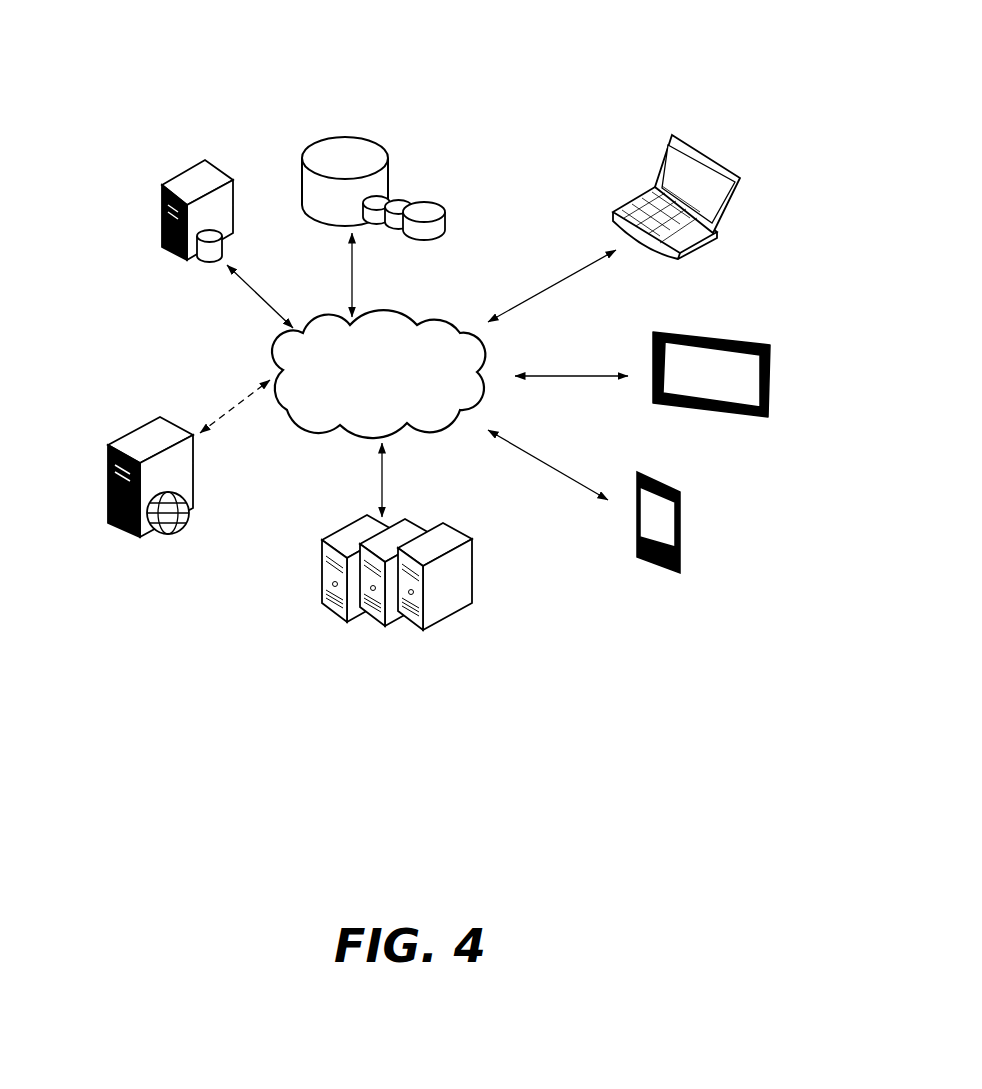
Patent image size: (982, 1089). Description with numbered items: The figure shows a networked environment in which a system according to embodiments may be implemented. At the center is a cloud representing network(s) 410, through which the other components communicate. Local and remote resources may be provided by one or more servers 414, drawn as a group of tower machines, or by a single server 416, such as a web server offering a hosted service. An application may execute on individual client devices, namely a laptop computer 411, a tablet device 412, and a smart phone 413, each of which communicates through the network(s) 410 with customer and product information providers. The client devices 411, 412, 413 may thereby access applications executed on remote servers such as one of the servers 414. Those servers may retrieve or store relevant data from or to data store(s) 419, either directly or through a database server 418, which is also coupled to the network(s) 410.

The network(s) 410 is at (387, 300).
The laptop computer 411 is at (710, 137).
The tablet device 412 is at (743, 317).
The smart phone 413 is at (688, 490).
The servers 414 is at (345, 520).
The single server 416 is at (128, 425).
The database server 418 is at (198, 270).
The data store(s) 419 is at (358, 117).